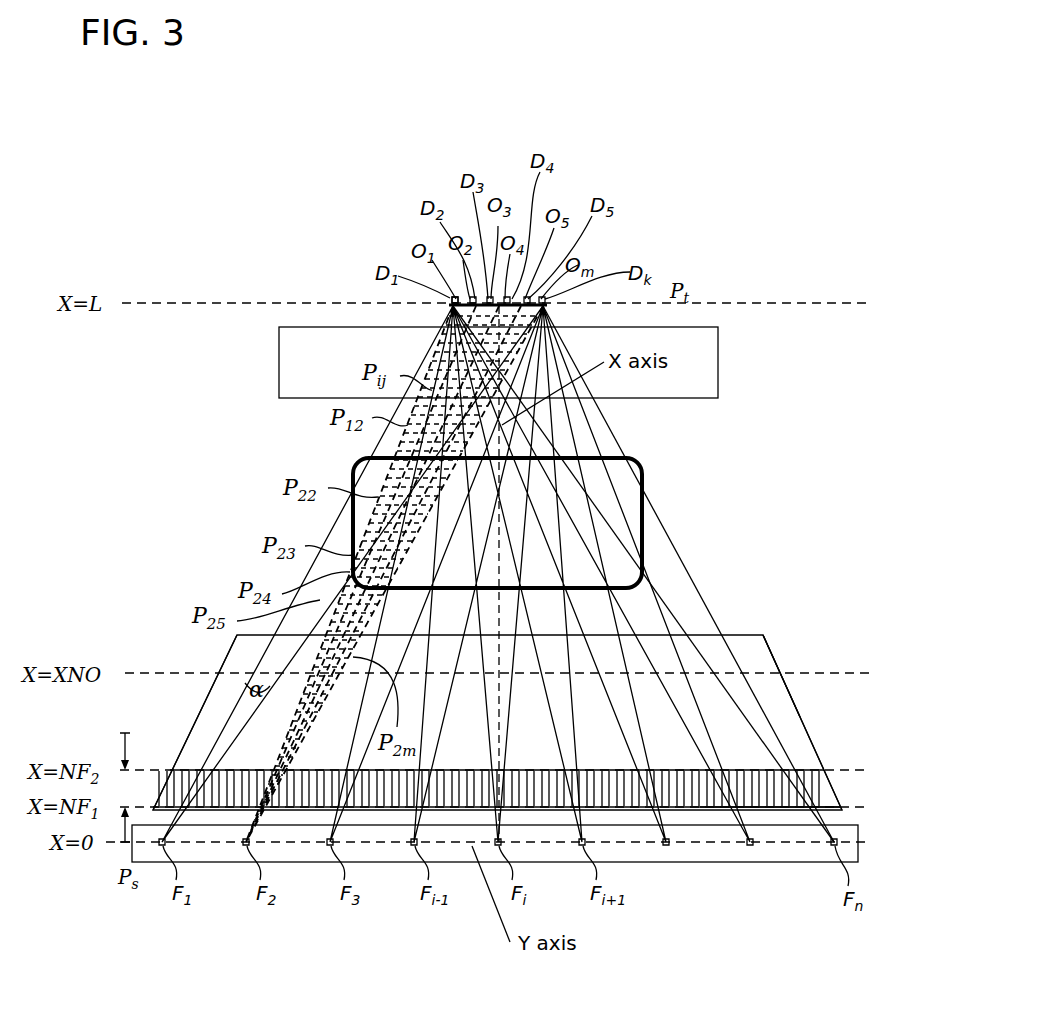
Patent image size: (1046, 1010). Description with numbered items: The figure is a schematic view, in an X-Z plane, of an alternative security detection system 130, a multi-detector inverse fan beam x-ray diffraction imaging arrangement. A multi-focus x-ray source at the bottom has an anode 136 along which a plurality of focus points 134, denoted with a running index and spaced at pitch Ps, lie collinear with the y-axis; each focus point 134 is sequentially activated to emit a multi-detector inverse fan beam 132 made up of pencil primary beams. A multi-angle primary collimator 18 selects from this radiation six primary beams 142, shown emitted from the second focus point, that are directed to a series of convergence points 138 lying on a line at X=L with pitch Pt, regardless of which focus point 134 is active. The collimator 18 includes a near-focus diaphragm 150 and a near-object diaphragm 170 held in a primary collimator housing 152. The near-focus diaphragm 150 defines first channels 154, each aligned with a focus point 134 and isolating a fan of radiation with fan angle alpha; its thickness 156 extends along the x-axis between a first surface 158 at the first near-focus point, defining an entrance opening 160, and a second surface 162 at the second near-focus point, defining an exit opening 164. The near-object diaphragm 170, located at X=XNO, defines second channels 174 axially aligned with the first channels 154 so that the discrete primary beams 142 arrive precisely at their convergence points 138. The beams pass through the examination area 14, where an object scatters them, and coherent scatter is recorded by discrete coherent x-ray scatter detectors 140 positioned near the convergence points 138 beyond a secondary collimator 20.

The examination area 14 is at (632, 460).
The multi-angle primary collimator 18 is at (800, 716).
The secondary collimator 20 is at (718, 388).
The security detection system 130 is at (798, 294).
The multi-detector inverse fan beam 132 is at (322, 722).
The focus points 134 is at (848, 830).
The anode 136 is at (690, 846).
The convergence points 138 is at (438, 284).
The discrete coherent x-ray scatter detectors 140 is at (560, 310).
The primary beam 142 is at (296, 708).
The near-focus diaphragm 150 is at (823, 789).
The primary collimator housing 152 is at (765, 635).
The first channels 154 is at (800, 782).
The thickness 156 is at (124, 742).
The first surface 158 is at (767, 812).
The entrance opening 160 is at (795, 812).
The second surface 162 is at (740, 770).
The exit opening 164 is at (792, 780).
The near-object diaphragm 170 is at (203, 712).
The second channels 174 is at (740, 693).